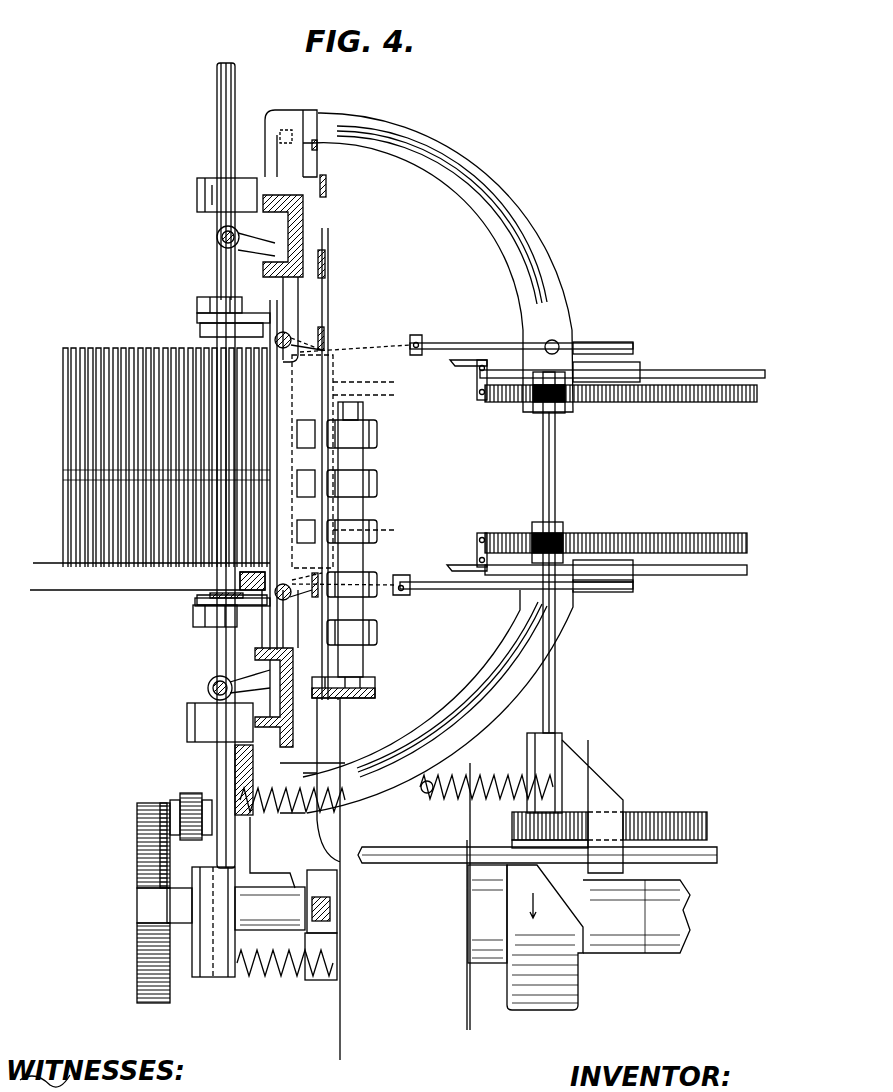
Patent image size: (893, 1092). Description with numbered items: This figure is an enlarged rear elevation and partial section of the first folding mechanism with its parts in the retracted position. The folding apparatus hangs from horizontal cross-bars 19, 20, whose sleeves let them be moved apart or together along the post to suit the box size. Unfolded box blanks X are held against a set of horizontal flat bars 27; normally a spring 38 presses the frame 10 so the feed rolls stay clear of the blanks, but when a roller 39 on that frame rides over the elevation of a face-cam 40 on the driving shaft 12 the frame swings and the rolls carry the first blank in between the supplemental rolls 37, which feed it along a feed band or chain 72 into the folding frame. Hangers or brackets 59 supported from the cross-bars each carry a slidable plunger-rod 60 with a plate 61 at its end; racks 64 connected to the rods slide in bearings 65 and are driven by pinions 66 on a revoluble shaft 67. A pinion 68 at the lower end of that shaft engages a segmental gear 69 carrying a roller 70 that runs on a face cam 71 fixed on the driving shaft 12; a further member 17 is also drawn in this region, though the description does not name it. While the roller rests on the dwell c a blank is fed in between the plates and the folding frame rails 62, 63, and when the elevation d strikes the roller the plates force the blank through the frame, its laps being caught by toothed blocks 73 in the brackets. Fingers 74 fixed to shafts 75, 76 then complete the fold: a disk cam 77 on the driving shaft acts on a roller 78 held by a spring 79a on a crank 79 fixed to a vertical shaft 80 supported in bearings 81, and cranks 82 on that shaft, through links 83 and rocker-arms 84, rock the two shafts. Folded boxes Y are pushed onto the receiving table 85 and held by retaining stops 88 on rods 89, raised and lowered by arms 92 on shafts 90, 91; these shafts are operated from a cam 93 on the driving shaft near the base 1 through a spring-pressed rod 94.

The vertical shaft 80 is at (222, 140).
The bearings 81 is at (200, 197).
The cross-bar 19 is at (305, 215).
The flat bars 27 is at (325, 262).
The box blanks X is at (328, 315).
The shaft 75 is at (286, 334).
The folding frame rail 62 is at (324, 335).
The fingers 74 is at (326, 350).
The toothed blocks 73 is at (418, 340).
The hangers or brackets 59 is at (520, 212).
The revoluble shaft 67 is at (555, 688).
The bearings 65 is at (562, 410).
The pinions 66 is at (585, 403).
The racks 64 is at (668, 400).
The plunger-rod 60 is at (705, 372).
The plate 61 is at (478, 368).
The folded boxes Y is at (90, 348).
The receiving table 85 is at (98, 585).
The retaining stops 88 is at (270, 372).
The supplemental rolls 37 is at (310, 483).
The folding frame rail 63 is at (360, 628).
The shaft 76 is at (288, 592).
The feed band or chain 72 is at (378, 688).
The cross-bar 20 is at (295, 737).
The shaft 90 is at (218, 235).
The arms 92 is at (262, 256).
The shaft 91 is at (240, 683).
The rocker-arms 84 is at (262, 300).
The cranks 82 is at (200, 305).
The links 83 is at (200, 319).
The rods 89 is at (280, 190).
The pinion 68 is at (585, 812).
The segmental gear 69 is at (680, 815).
The roller 70 is at (515, 842).
The rack 17 is at (412, 862).
The face cam 71 is at (527, 1012).
The driving shaft 12 is at (462, 916).
The elevation d is at (588, 950).
The dwell c is at (580, 990).
The base 1 is at (401, 1000).
The rod 94 is at (337, 905).
The cam 93 is at (335, 940).
The crank 79 is at (201, 922).
The spring 79a is at (283, 978).
The roller 78 is at (140, 915).
The disk cam 77 is at (150, 855).
The face-cam 40 is at (165, 980).
The frame 10 is at (188, 800).
The spring 38 is at (200, 795).
The roller 39 is at (178, 810).